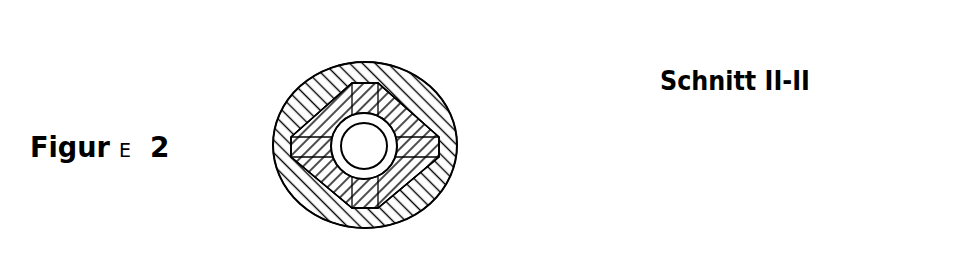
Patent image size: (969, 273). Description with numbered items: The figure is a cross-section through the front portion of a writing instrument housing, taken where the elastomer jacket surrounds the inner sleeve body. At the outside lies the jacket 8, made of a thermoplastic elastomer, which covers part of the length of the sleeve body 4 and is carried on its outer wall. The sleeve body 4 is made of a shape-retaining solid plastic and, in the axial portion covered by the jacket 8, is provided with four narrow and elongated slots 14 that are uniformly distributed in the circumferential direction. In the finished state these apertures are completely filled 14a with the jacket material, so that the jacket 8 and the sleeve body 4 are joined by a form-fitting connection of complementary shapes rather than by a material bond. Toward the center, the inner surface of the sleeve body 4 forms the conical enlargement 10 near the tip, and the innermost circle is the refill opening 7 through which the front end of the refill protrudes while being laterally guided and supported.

The jacket 8 is at (365, 125).
The sleeve body 4 is at (398, 135).
The wall aperture 14 is at (311, 171).
The filled aperture 14a is at (427, 147).
The conical enlargement 10 is at (348, 118).
The refill opening 7 is at (423, 187).